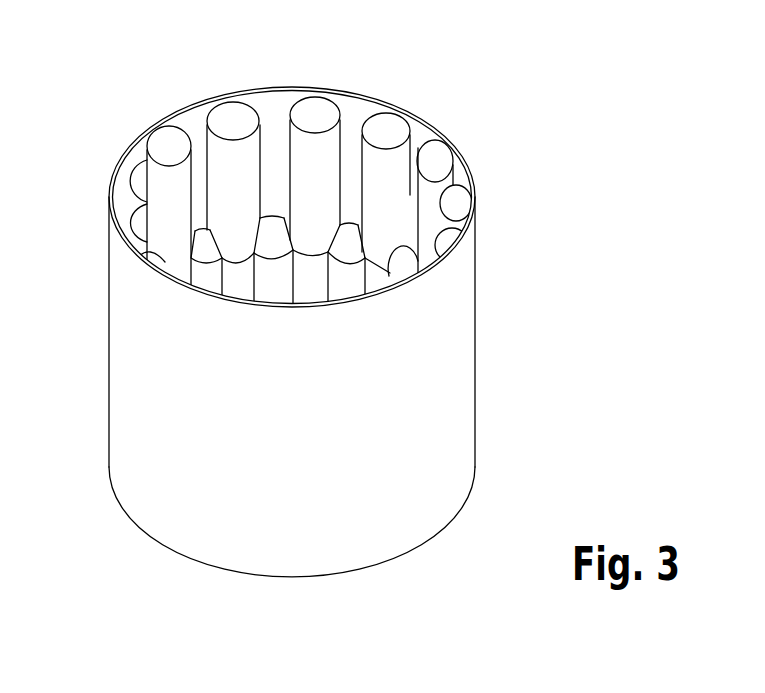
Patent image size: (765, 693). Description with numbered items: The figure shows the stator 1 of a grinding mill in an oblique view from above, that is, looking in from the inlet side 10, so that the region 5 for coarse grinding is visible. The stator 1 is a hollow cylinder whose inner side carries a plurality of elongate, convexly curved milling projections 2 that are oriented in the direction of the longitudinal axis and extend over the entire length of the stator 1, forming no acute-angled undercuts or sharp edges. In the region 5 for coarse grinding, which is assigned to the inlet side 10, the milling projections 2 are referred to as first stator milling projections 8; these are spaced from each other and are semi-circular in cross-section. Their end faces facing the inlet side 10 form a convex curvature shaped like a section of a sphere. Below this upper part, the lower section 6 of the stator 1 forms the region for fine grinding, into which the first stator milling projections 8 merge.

The stator 1 is at (323, 537).
The milling projections 2 is at (237, 150).
The region for coarse grinding 5 is at (307, 113).
The lower section 6 is at (349, 238).
The first stator milling projections 8 is at (436, 193).
The inlet side 10 is at (183, 185).